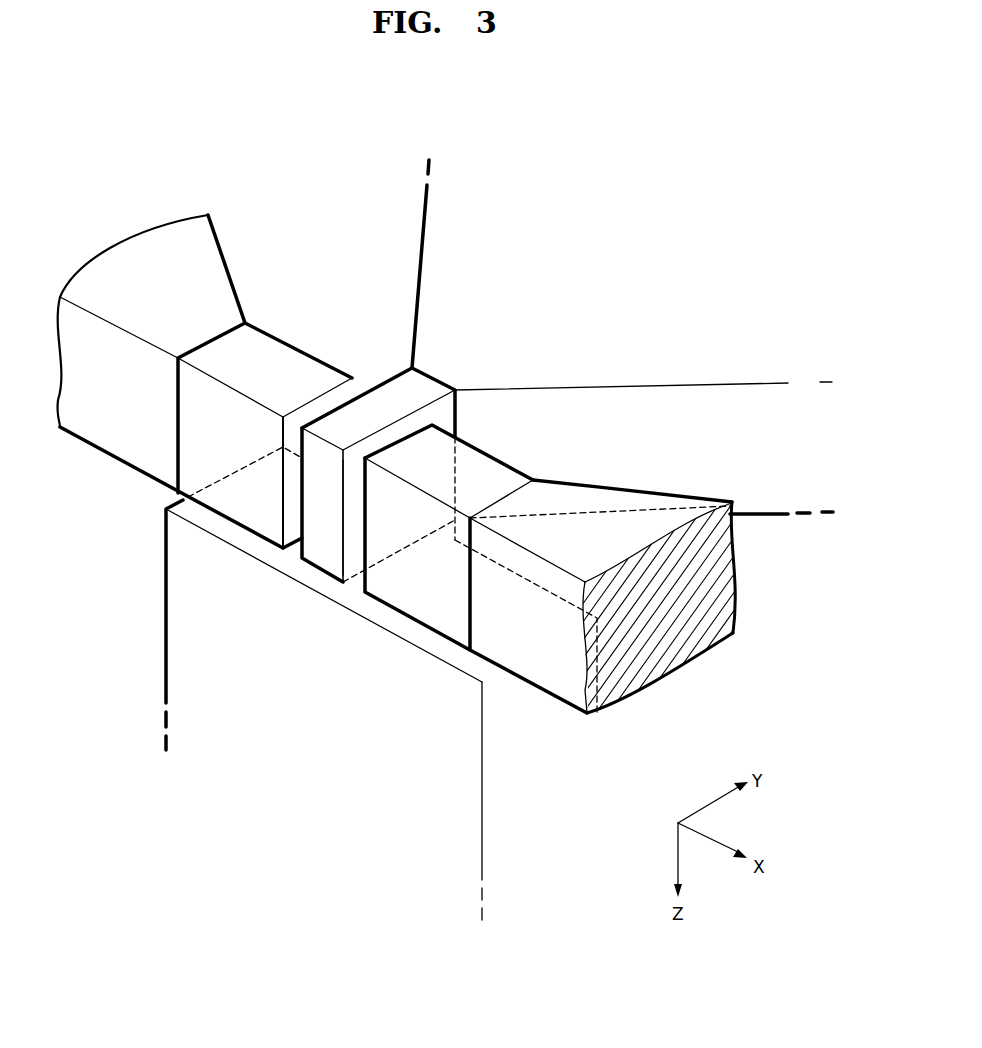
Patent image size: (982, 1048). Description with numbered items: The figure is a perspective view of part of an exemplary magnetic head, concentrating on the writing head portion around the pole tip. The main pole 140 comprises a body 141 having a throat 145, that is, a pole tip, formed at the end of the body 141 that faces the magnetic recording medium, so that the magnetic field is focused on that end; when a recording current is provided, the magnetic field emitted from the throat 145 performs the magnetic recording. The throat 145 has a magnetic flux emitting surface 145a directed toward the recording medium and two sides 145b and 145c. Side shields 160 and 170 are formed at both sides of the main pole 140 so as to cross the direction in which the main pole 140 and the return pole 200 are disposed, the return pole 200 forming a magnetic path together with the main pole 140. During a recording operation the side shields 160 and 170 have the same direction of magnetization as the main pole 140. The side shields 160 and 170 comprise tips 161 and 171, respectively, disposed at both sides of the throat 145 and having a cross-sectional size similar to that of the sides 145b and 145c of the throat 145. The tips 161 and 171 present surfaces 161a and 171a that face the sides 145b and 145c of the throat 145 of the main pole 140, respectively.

The main pole 140 is at (405, 200).
The body 141 is at (443, 297).
The throat 145 is at (338, 414).
The magnetic flux emitting surface 145a is at (325, 560).
The side of the throat 145b is at (296, 500).
The side of the throat 145c is at (352, 552).
The side shield 160 is at (140, 450).
The tip 161 is at (265, 353).
The surface 161a is at (290, 497).
The side shield 170 is at (488, 639).
The tip 171 is at (485, 465).
The surface 171a is at (365, 541).
The return pole 200 is at (178, 608).